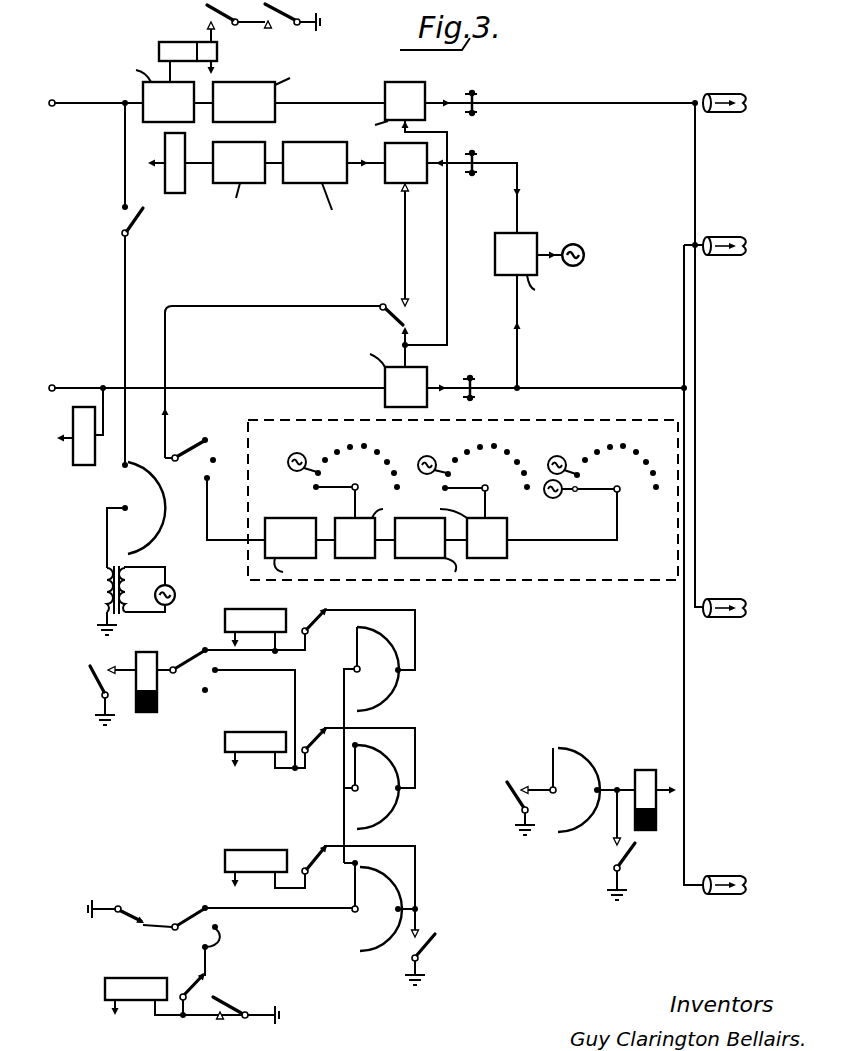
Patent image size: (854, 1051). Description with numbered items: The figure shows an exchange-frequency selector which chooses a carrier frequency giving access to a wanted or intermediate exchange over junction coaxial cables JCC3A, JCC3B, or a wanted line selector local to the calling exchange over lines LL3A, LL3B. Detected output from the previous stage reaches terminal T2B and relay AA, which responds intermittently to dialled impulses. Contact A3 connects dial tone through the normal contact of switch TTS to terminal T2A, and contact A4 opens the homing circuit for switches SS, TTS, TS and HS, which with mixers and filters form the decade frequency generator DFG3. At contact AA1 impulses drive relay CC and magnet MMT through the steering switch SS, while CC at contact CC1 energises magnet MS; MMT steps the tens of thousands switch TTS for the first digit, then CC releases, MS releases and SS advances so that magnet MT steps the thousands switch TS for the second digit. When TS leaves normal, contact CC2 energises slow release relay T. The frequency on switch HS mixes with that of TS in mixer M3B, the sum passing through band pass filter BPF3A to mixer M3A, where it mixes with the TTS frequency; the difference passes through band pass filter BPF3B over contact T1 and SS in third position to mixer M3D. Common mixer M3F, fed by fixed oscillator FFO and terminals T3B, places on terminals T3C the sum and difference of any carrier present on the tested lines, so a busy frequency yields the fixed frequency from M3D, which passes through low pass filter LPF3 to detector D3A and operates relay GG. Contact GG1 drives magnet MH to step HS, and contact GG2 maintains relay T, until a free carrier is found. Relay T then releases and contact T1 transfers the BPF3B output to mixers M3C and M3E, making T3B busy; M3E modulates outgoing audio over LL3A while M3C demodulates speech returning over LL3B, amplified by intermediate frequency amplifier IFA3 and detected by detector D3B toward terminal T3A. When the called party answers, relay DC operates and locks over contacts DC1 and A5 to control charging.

The terminal T2A is at (90, 110).
The terminal T2B is at (88, 383).
The contact of relay A A3 is at (120, 336).
The relay DC is at (202, 52).
The contact of relay DC DC1 is at (226, 16).
The contact of relay A A5 is at (292, 24).
The detector D3B is at (131, 92).
The intermediate frequency amplifier IFA3 is at (336, 88).
The mixer M3C is at (509, 213).
The terminal T3A is at (472, 91).
The terminals T3B is at (472, 377).
The terminals T3C is at (473, 151).
The junction coaxial cable JCC3B is at (720, 92).
The junction coaxial cable JCC3A is at (720, 235).
The line LL3B is at (723, 598).
The line LL3A is at (723, 875).
The relay GG is at (180, 174).
The detector D3A is at (239, 180).
The low pass filter LPF3 is at (334, 193).
The mixer M3D is at (453, 224).
The mixer M3E is at (384, 375).
The common mixer M3F is at (538, 312).
The oscillator FFO is at (561, 245).
The contact of relay T T1 is at (296, 381).
The relay AA is at (74, 426).
The tens of thousands switch TTS is at (245, 653).
The steering switch SS is at (258, 706).
The decade frequency generator DFG3 is at (318, 420).
The band pass filter BPF3B is at (339, 548).
The mixer M3A is at (401, 529).
The band pass filter BPF3A is at (431, 545).
The mixer M3B is at (542, 525).
The thousands switch TS is at (489, 637).
The switch HS is at (501, 697).
The magnet MMT is at (320, 638).
The magnet MT is at (320, 756).
The magnet MH is at (321, 877).
The magnet MS is at (144, 996).
The relay CC is at (139, 691).
The contact of relay AA AA1 is at (108, 687).
The contact of relay A A4 is at (130, 918).
The contact of relay CC CC1 is at (229, 1005).
The contact of relay GG GG1 is at (431, 947).
The contact of relay CC CC2 is at (528, 801).
The slow release relay T is at (655, 789).
The contact of relay GG GG2 is at (609, 843).